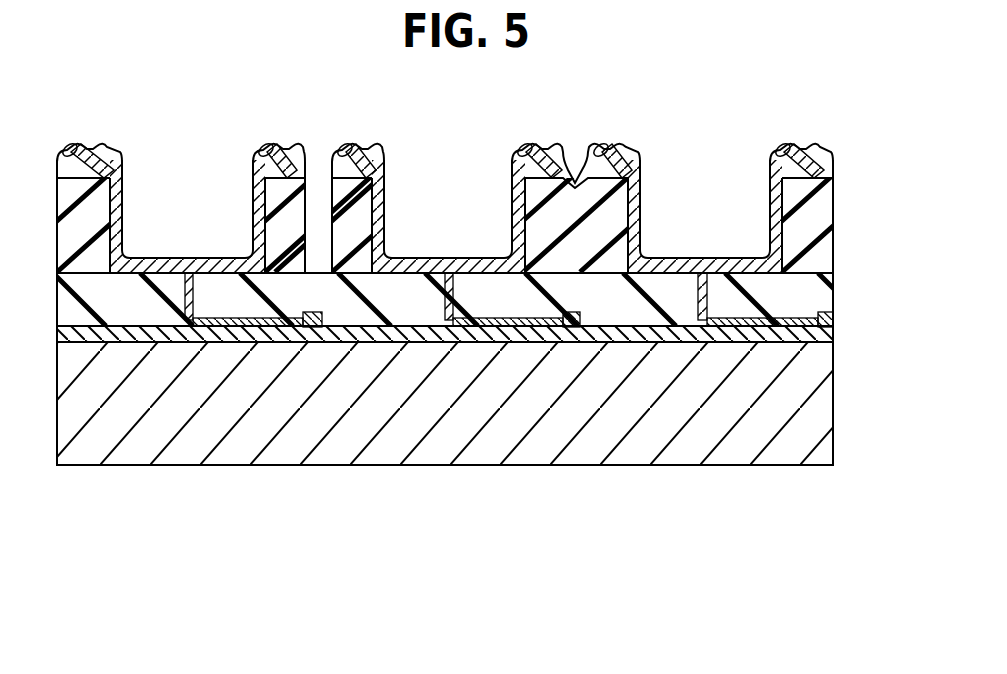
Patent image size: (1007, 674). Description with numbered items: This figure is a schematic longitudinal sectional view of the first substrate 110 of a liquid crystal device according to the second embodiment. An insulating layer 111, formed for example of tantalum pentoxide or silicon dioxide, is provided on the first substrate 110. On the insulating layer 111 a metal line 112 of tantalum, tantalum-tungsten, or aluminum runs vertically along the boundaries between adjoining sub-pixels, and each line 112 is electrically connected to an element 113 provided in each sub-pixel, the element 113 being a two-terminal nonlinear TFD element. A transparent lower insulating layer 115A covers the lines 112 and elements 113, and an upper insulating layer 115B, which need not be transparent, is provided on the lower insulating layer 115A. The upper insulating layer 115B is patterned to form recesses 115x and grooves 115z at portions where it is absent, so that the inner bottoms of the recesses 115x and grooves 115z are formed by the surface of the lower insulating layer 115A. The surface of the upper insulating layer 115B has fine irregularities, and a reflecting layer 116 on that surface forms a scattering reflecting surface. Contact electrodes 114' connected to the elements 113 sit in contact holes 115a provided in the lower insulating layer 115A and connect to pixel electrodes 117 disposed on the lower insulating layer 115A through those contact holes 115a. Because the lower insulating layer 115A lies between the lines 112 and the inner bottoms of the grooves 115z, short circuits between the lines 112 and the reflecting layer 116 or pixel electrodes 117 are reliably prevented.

The first substrate 110 is at (827, 397).
The insulating layer 111 is at (827, 333).
The line 112 is at (304, 328).
The element 113 is at (197, 328).
The contact electrode 114' is at (436, 250).
The lower insulating layer 115A is at (827, 293).
The upper insulating layer 115B is at (827, 221).
The contact hole 115a is at (444, 278).
The recess 115x is at (423, 171).
The groove 115z is at (306, 194).
The reflecting layer 116 is at (826, 171).
The pixel electrode 117 is at (819, 157).